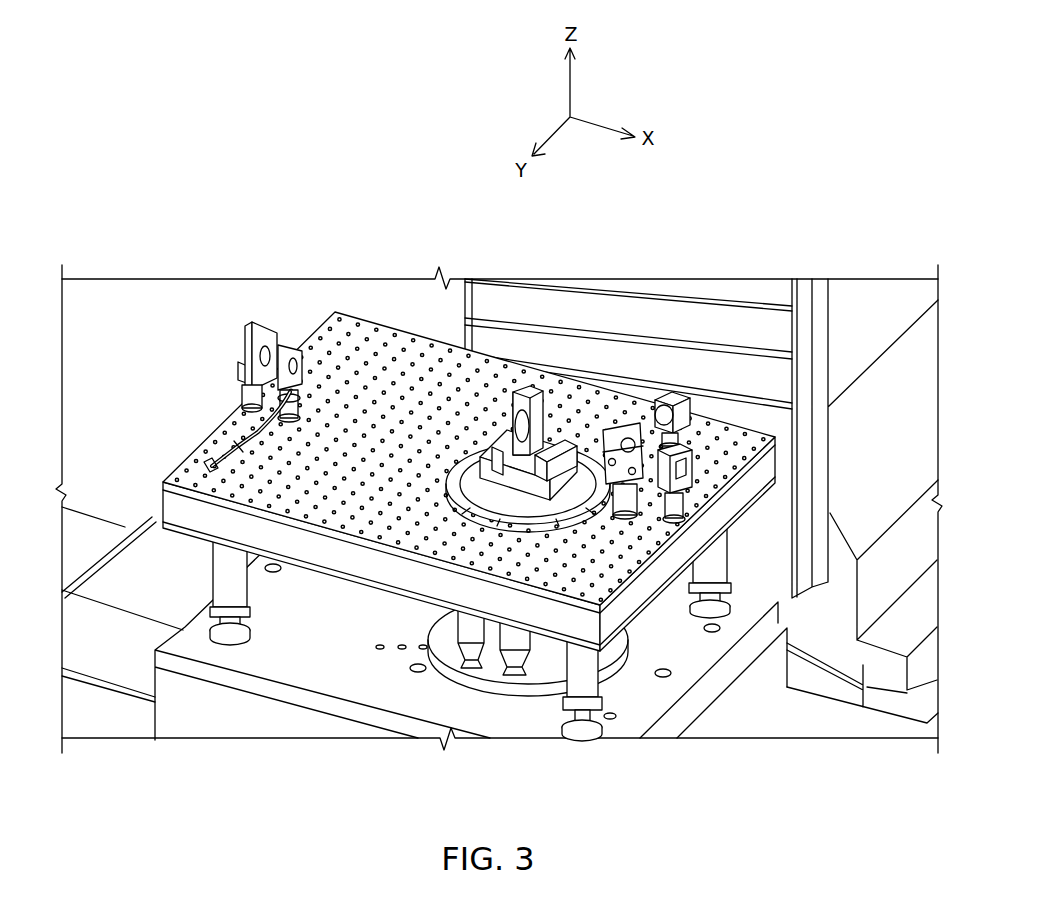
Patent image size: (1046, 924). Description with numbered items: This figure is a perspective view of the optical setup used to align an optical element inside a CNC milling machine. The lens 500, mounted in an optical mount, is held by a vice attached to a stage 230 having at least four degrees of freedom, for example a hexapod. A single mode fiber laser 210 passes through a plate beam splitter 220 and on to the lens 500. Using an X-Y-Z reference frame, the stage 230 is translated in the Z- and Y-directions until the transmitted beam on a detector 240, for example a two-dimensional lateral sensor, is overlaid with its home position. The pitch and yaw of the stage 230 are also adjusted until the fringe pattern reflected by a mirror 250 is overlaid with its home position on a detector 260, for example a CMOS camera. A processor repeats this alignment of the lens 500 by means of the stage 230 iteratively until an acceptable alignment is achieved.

The lens 500 is at (547, 412).
The plate beam splitter 220 is at (620, 427).
The detector 260 is at (673, 395).
The single mode fiber laser 210 is at (693, 462).
The mirror 250 is at (250, 333).
The detector 240 is at (290, 347).
The stage 230 is at (507, 478).